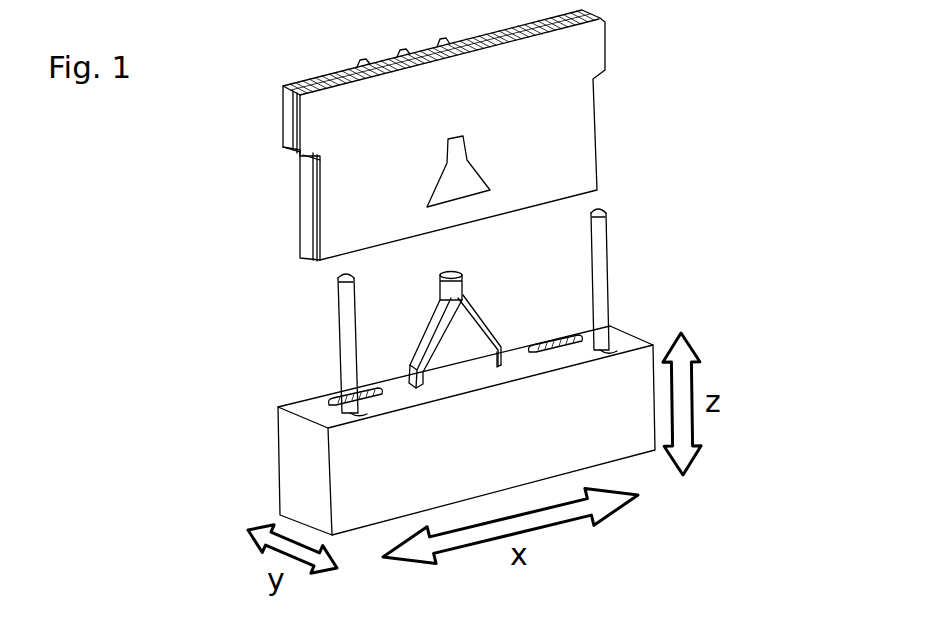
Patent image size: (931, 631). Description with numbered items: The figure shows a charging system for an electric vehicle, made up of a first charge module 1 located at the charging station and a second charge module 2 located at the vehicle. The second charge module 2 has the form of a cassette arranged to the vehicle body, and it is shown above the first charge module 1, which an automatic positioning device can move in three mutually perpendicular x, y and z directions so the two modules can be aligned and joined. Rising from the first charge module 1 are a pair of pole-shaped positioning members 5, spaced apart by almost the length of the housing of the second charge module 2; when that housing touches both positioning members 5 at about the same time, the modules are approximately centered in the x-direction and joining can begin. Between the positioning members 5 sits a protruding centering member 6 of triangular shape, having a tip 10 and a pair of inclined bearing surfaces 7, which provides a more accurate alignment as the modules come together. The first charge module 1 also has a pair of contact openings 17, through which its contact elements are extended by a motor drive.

The first charge module 1 is at (312, 474).
The second charge module 2 is at (358, 203).
The positioning members 5 is at (348, 356).
The centering member 6 is at (456, 309).
The inclined bearing surfaces 7 is at (433, 315).
The tip 10 is at (455, 272).
The contact openings 17 is at (338, 401).